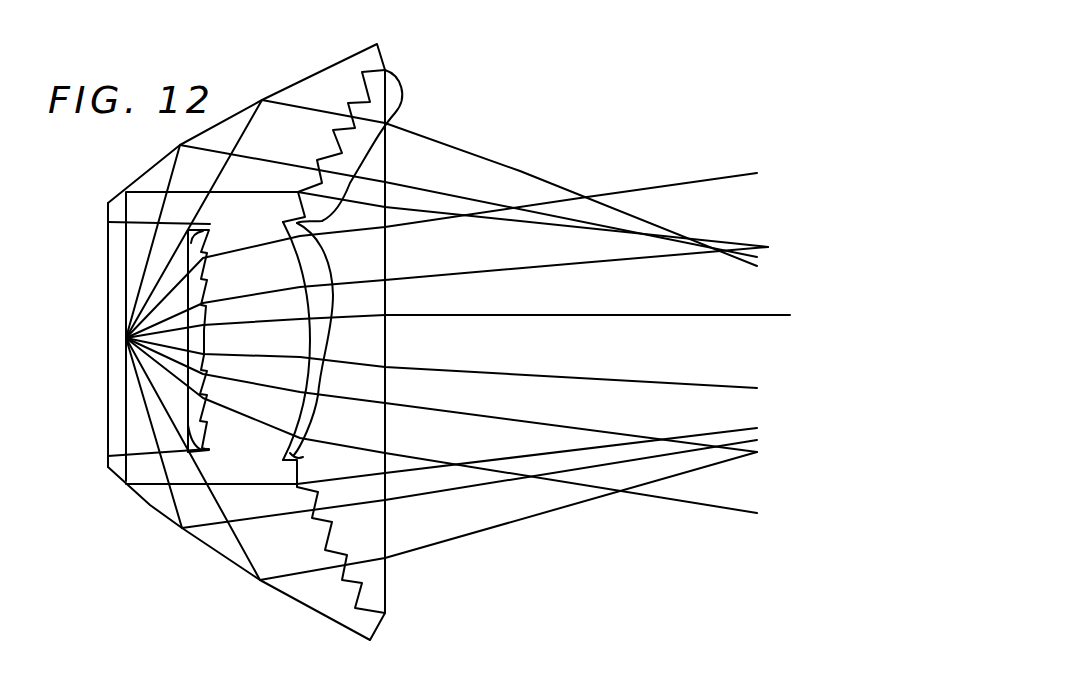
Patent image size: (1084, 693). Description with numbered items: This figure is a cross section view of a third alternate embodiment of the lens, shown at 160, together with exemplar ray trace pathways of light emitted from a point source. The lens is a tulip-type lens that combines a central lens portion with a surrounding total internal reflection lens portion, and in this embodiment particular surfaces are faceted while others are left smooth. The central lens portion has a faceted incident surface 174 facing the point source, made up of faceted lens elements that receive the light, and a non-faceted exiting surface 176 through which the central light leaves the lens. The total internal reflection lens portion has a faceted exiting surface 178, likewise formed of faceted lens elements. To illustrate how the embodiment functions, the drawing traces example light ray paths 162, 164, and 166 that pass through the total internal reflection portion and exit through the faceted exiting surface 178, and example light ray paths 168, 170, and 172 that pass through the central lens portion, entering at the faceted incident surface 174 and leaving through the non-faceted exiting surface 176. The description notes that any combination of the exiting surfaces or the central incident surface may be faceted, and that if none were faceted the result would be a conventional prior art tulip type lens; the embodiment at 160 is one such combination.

The third alternate embodiment lens 160 is at (424, 90).
The light ray path 162 is at (150, 193).
The light ray path 164 is at (272, 157).
The light ray path 166 is at (303, 103).
The light ray path 168 is at (413, 367).
The light ray path 170 is at (446, 412).
The light ray path 172 is at (417, 462).
The faceted incident surface 174 is at (202, 412).
The non-faceted exiting surface 176 is at (322, 338).
The faceted exiting surface 178 is at (365, 146).